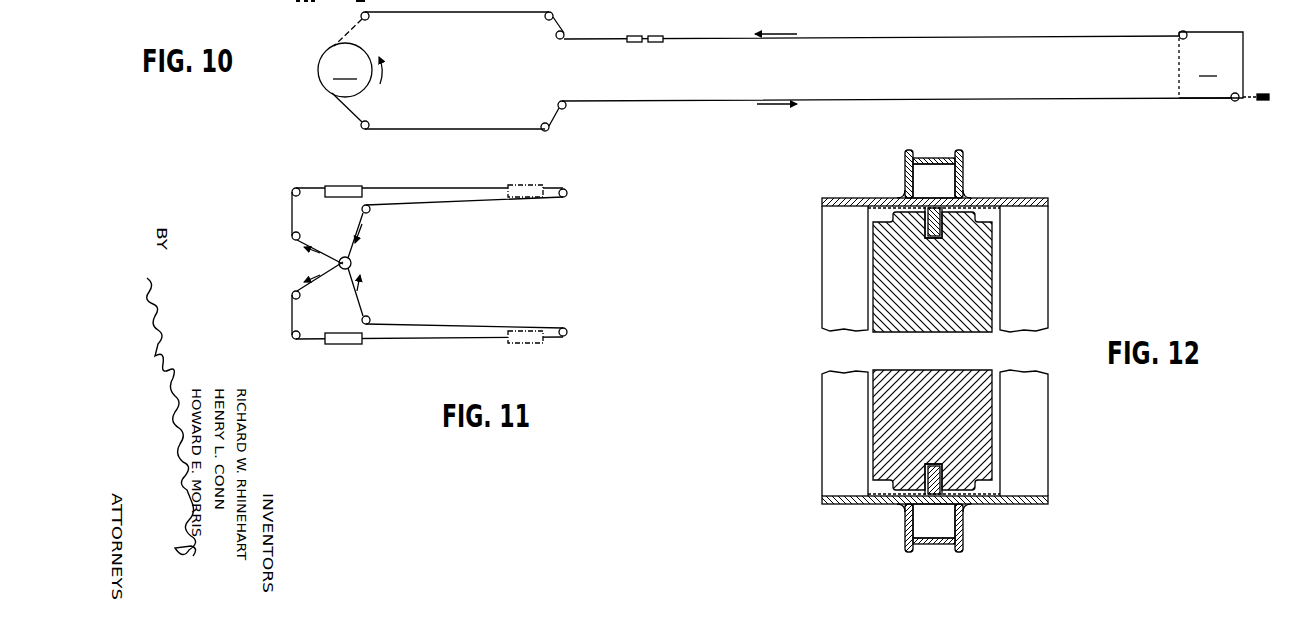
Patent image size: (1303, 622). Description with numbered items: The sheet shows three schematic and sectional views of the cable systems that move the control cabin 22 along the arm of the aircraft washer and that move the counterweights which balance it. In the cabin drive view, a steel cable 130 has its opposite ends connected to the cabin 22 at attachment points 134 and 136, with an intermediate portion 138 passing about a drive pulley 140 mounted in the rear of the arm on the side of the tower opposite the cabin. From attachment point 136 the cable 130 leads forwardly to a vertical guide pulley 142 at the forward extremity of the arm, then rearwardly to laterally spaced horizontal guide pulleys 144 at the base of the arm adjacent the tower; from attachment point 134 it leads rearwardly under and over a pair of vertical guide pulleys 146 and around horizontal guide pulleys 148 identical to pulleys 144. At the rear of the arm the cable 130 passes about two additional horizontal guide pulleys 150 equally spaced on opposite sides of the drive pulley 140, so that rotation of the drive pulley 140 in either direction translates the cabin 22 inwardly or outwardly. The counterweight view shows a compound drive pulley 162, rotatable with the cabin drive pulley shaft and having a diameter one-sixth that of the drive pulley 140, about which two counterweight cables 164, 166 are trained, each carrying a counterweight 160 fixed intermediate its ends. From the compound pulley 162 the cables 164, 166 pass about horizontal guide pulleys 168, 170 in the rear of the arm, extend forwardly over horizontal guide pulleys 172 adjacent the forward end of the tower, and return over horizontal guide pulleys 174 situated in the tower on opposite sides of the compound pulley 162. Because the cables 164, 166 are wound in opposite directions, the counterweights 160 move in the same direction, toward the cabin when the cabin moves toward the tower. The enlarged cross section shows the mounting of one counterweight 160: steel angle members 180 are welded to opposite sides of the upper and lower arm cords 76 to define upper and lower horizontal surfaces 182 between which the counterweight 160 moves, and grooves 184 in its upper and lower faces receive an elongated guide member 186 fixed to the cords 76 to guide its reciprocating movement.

In FIG. 10, the control cabin 22 is at (1211, 65).
In FIG. 10, the steel cable 130 is at (856, 39).
In FIG. 10, the cable attachment point 134 is at (1187, 33).
In FIG. 10, the cable attachment point 136 is at (1232, 99).
In FIG. 10, the intermediate portion of cable 138 is at (340, 36).
In FIG. 10, the drive pulley 140 is at (350, 70).
In FIG. 10, the vertical guide pulley 142 is at (1270, 95).
In FIG. 10, the horizontal guide pulleys 144 is at (557, 102).
In FIG. 10, the vertical guide pulleys 146 is at (657, 35).
In FIG. 10, the horizontal guide pulleys 148 is at (553, 23).
In FIG. 10, the horizontal guide pulleys 150 is at (369, 18).
In FIG. 11, the counterweights 160 is at (348, 186).
In FIG. 12, the counterweights 160 is at (885, 292).
In FIG. 11, the compound drive pulley 162 is at (355, 257).
In FIG. 11, the counterweight cable 164 is at (458, 189).
In FIG. 11, the counterweight cable 166 is at (478, 325).
In FIG. 11, the horizontal guide pulley 168 is at (301, 234).
In FIG. 11, the horizontal guide pulley 170 is at (296, 188).
In FIG. 11, the horizontal guide pulleys 172 is at (568, 189).
In FIG. 11, the horizontal guide pulleys 174 is at (372, 213).
In FIG. 12, the arm cords 76 is at (948, 152).
In FIG. 12, the steel angle members 180 is at (904, 186).
In FIG. 12, the horizontal surfaces 182 is at (1003, 204).
In FIG. 12, the grooves 184 is at (935, 238).
In FIG. 12, the elongated guide member 186 is at (944, 226).